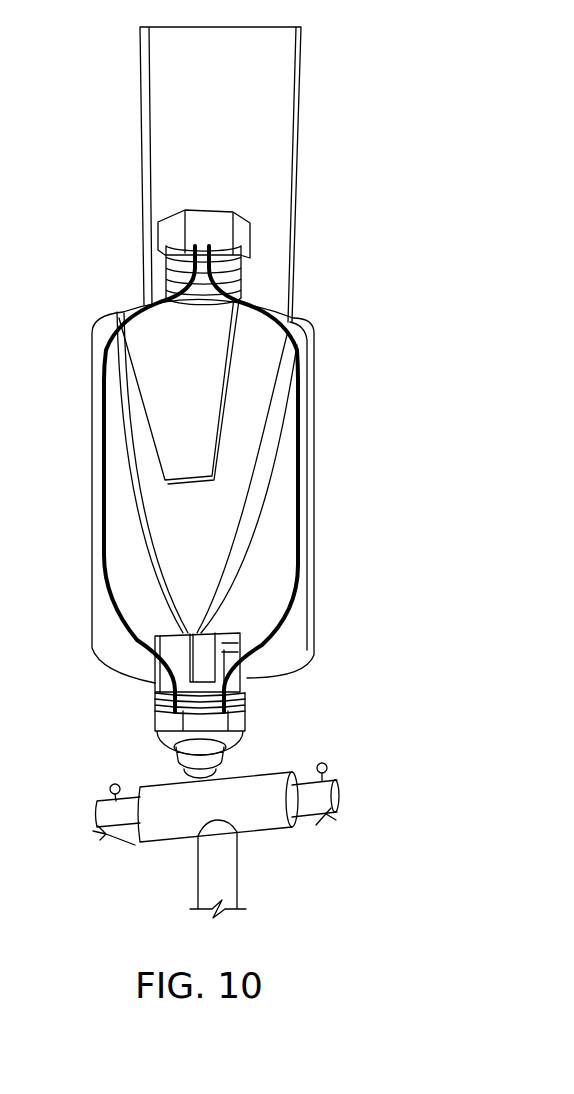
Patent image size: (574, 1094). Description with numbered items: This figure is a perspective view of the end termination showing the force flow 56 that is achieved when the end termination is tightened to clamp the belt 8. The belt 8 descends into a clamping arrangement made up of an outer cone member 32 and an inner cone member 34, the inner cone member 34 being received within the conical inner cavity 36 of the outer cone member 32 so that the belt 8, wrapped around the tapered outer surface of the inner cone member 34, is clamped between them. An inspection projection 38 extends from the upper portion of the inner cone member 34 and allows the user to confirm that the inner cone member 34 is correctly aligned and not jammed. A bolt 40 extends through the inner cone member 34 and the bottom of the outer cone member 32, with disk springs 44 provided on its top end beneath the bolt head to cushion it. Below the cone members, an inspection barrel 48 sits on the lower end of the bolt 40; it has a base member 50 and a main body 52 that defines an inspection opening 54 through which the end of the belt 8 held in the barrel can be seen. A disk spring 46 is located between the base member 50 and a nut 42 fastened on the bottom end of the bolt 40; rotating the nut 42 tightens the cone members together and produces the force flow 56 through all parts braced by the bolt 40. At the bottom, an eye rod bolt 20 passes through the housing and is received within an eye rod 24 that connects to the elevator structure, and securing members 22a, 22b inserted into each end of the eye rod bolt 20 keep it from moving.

The belt 8 is at (273, 76).
The bolt 40 is at (222, 224).
The disk spring 44 is at (233, 278).
The outer cone member 32 is at (314, 452).
The force flow 56 is at (105, 490).
The inner cone member 34 is at (253, 393).
The inner cavity 36 is at (130, 428).
The inspection projection 38 is at (157, 392).
The main body 52 is at (155, 640).
The inspection opening 54 is at (197, 670).
The inspection barrel 48 is at (240, 672).
The disk spring 46 is at (243, 697).
The base member 50 is at (163, 700).
The nut 42 is at (242, 727).
The eye rod bolt 20 is at (340, 795).
The eye rod 24 is at (218, 878).
The securing member 22a is at (117, 848).
The securing member 22b is at (317, 820).